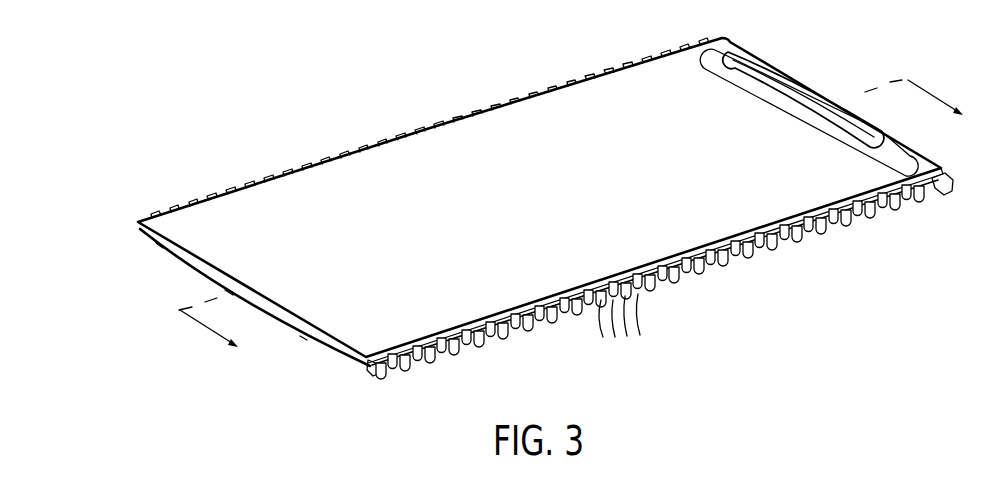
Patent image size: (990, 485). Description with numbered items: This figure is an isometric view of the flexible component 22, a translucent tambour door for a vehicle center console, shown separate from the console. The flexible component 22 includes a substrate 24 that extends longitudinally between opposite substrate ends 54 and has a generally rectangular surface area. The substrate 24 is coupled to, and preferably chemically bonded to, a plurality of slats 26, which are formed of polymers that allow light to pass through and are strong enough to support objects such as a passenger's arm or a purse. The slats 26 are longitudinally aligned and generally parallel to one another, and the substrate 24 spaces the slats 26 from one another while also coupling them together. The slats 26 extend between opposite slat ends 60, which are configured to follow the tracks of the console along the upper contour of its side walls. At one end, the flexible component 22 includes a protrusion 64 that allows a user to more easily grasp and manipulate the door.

The flexible component 22 is at (172, 130).
The substrate 24 is at (490, 100).
The slats 26 is at (619, 331).
The substrate ends 54 is at (297, 326).
The slat ends 60 is at (656, 52).
The protrusion 64 is at (805, 87).